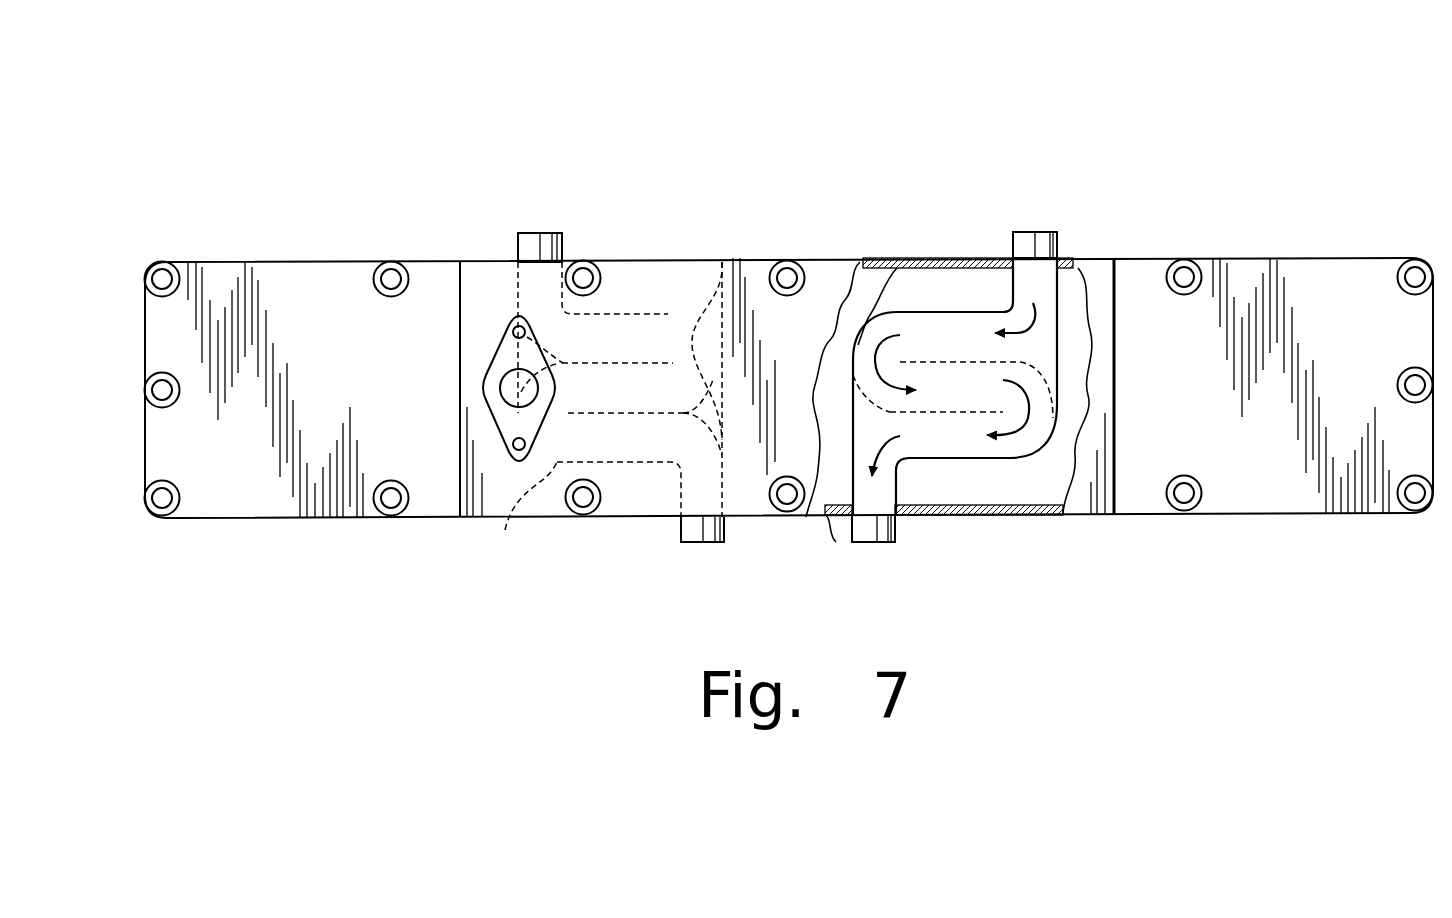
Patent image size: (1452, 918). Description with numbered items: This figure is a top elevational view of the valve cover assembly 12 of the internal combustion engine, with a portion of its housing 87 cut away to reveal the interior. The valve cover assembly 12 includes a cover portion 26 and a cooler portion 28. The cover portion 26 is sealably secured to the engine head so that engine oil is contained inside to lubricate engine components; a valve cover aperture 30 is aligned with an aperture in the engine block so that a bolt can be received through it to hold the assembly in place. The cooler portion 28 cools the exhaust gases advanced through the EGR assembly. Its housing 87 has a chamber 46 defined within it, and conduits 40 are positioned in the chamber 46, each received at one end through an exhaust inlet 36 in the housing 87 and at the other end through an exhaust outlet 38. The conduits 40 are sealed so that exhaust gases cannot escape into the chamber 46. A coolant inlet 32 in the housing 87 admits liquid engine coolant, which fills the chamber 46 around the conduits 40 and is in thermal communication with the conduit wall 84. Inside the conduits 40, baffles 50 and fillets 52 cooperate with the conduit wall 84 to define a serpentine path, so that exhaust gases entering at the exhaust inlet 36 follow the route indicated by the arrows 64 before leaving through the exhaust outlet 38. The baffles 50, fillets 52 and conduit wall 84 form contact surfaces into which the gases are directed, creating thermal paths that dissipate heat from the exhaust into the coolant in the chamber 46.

The valve cover assembly 12 is at (860, 134).
The cover portion 26 is at (326, 522).
The cooler portion 28 is at (539, 522).
The valve cover aperture 30 is at (1417, 274).
The coolant inlet 32 is at (504, 384).
The exhaust inlet 36 is at (1028, 258).
The exhaust outlet 38 is at (852, 528).
The conduits 40 is at (635, 314).
The chamber 46 is at (928, 288).
The baffles 50 is at (663, 363).
The fillets 52 is at (722, 262).
The arrows 64 is at (901, 258).
The conduit wall 84 is at (822, 505).
The housing 87 is at (485, 283).